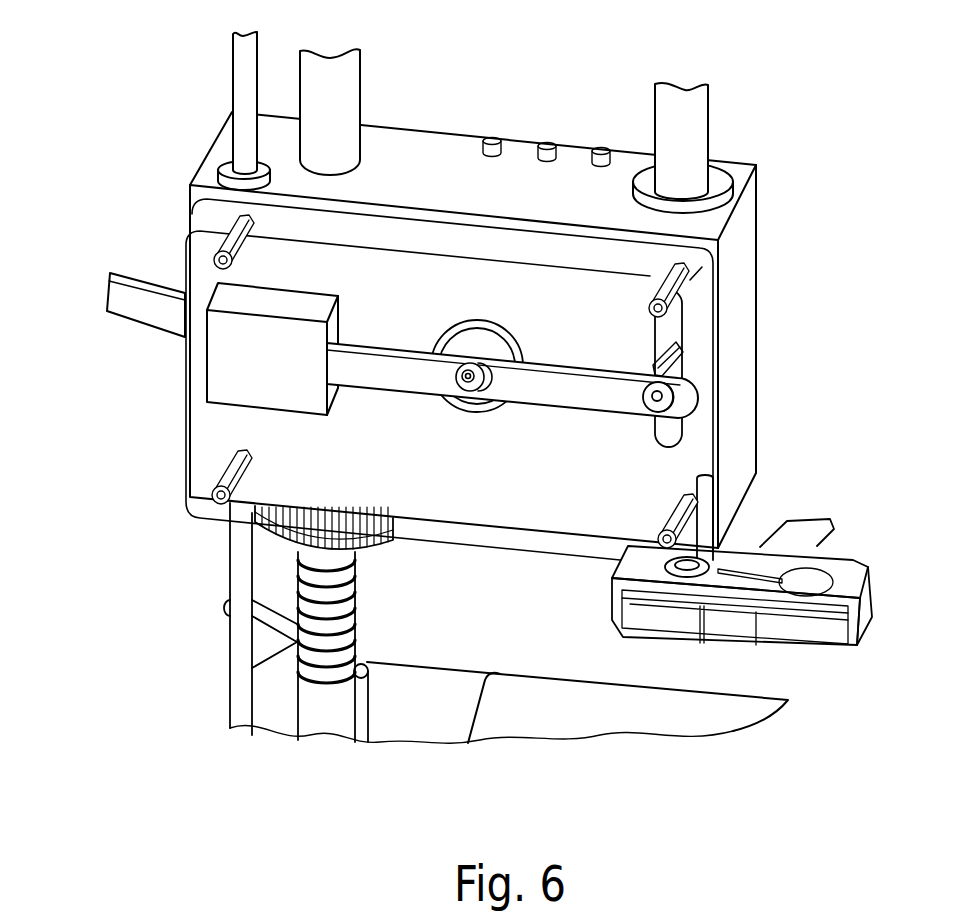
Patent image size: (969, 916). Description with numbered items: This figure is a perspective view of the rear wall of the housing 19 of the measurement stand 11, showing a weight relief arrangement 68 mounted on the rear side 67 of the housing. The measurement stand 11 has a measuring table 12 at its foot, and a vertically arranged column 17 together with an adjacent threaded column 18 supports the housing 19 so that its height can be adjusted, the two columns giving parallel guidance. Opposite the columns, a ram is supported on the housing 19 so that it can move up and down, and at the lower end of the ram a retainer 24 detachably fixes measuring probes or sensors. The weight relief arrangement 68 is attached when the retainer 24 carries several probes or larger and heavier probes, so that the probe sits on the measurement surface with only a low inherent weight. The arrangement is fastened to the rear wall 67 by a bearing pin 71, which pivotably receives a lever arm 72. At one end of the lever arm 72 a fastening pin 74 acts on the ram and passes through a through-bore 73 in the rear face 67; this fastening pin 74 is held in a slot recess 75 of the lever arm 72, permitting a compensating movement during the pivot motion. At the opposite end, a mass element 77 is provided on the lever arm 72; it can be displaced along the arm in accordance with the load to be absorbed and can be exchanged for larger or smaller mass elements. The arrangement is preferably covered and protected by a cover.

The measurement stand 11 is at (450, 383).
The measuring table 12 is at (513, 687).
The column 17 is at (240, 83).
The threaded column 18 is at (345, 93).
The housing 19 is at (467, 105).
The retainer 24 is at (758, 520).
The rear side of the housing 67 is at (160, 458).
The weight relief arrangement 68 is at (564, 384).
The bearing pin 71 is at (512, 397).
The lever arm 72 is at (387, 377).
The through-bore 73 is at (672, 330).
The fastening pin 74 is at (680, 363).
The slot recess 75 is at (603, 400).
The mass element 77 is at (227, 350).